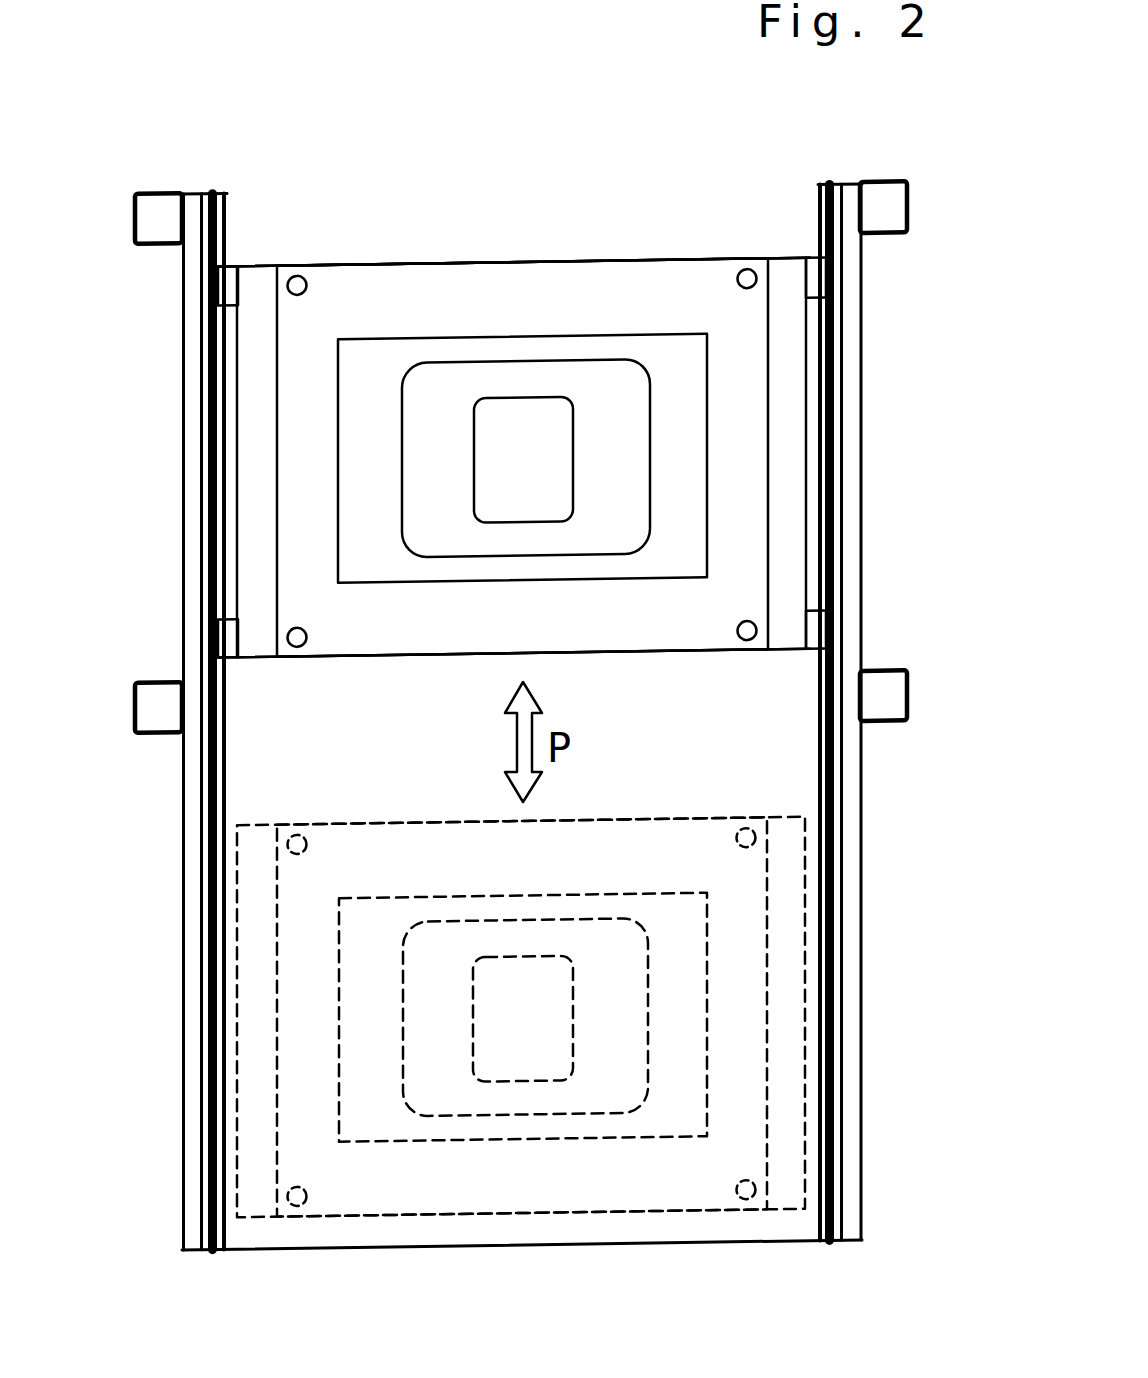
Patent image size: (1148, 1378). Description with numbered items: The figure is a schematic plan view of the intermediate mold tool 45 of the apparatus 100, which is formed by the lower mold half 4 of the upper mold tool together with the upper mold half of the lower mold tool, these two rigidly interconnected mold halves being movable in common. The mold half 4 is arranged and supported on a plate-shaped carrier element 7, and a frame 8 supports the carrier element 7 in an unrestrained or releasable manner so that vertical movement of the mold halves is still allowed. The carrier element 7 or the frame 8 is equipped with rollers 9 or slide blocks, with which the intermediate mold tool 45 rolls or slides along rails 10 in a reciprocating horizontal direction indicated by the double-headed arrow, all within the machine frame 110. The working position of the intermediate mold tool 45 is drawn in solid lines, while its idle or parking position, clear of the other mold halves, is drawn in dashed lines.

The lower mold half 4 is at (534, 479).
The plate-shaped carrier element 7 is at (478, 298).
The frame 8 is at (790, 303).
The rollers 9 is at (225, 287).
The rails 10 is at (221, 192).
The intermediate mold tool 45 is at (399, 212).
The apparatus 100 is at (633, 192).
The machine frame 110 is at (150, 225).